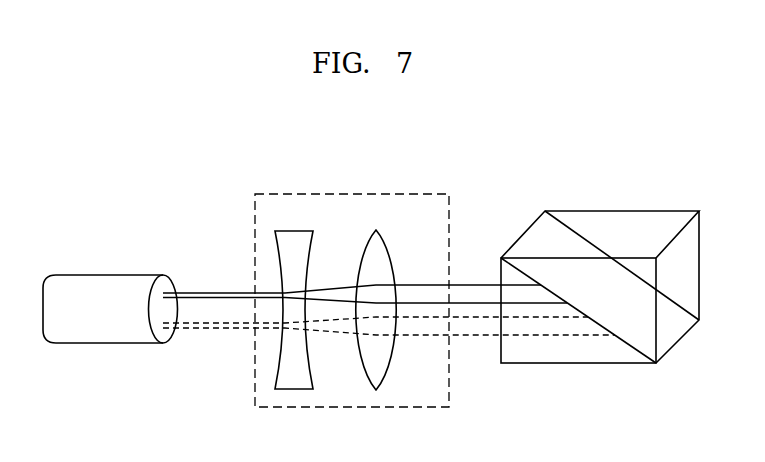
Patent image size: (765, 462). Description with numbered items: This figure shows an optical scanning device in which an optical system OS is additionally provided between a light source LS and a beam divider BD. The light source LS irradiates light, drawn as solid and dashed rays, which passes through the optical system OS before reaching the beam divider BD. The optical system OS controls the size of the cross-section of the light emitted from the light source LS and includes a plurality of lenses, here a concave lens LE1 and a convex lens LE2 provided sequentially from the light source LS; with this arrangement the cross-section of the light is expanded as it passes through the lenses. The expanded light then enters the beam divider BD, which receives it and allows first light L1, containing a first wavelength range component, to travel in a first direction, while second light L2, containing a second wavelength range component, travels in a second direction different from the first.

The light source LS is at (113, 275).
The second light L2 is at (202, 290).
The first light L1 is at (205, 331).
The optical system OS is at (352, 194).
The concave lens LE1 is at (296, 231).
The convex lens LE2 is at (378, 231).
The beam divider BD is at (624, 209).